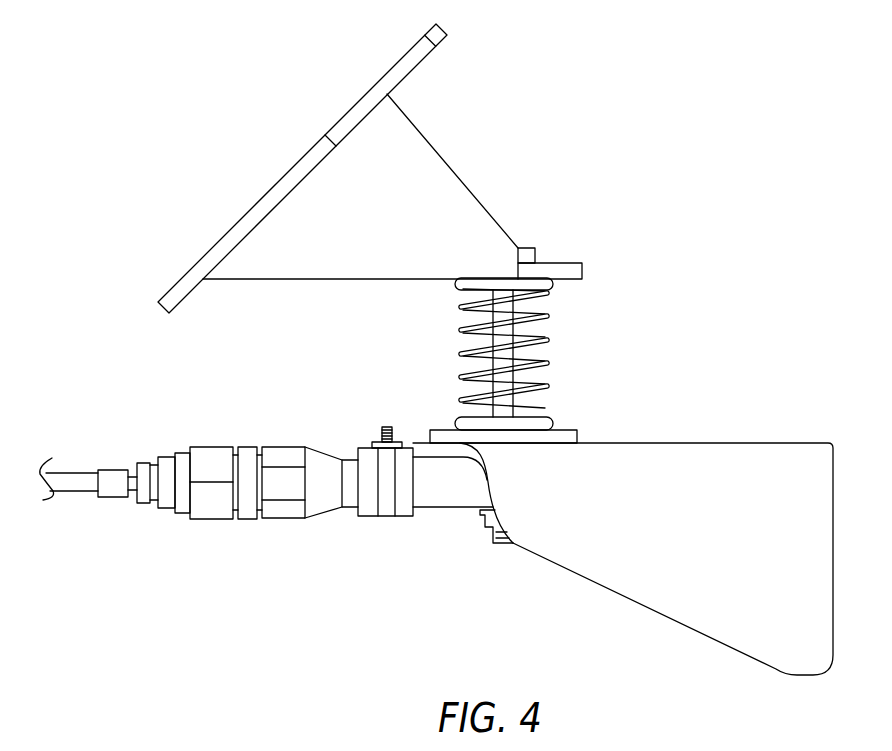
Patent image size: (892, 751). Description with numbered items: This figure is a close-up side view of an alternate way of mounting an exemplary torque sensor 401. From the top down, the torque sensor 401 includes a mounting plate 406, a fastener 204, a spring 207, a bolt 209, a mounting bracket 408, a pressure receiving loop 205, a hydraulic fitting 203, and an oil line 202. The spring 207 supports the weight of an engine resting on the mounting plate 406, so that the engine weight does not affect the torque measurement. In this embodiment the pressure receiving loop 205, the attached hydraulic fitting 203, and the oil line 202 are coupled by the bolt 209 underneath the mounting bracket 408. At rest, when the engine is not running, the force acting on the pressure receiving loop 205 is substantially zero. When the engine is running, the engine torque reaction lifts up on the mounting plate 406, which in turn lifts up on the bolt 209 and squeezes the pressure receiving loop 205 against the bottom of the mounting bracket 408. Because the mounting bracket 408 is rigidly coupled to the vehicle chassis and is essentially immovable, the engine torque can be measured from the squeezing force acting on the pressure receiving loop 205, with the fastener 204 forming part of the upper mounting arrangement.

The torque sensor 401 is at (664, 250).
The mounting plate 406 is at (350, 110).
The fastener 204 is at (535, 253).
The spring 207 is at (556, 326).
The bolt 209 is at (503, 368).
The mounting bracket 408 is at (652, 443).
The pressure receiving loop 205 is at (453, 495).
The hydraulic fitting 203 is at (283, 518).
The oil line 202 is at (73, 473).